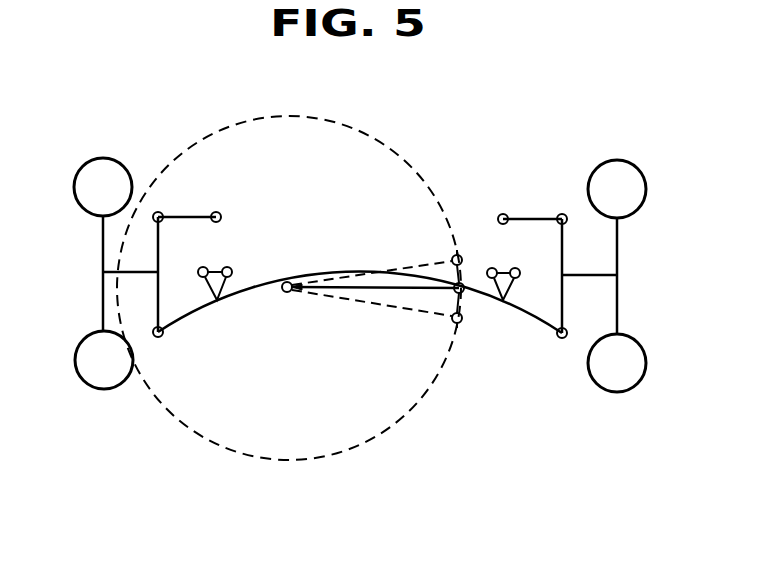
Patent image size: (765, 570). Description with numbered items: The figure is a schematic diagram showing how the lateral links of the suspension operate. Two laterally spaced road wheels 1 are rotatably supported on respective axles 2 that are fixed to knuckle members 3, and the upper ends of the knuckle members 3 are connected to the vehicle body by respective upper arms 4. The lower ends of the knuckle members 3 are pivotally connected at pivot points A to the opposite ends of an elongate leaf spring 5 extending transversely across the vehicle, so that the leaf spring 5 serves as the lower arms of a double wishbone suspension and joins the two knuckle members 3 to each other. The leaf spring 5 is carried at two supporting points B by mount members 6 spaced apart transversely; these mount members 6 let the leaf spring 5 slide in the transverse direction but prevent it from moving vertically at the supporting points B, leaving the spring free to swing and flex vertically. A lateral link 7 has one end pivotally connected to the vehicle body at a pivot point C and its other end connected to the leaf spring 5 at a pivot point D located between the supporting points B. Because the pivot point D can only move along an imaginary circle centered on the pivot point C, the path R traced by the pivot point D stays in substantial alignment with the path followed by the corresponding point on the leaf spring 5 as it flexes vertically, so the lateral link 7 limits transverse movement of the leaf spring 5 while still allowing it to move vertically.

The road wheel 1 is at (78, 372).
The axle 2 is at (140, 272).
The knuckle member 3 is at (163, 247).
The upper arm 4 is at (193, 212).
The leaf spring 5 is at (305, 272).
The mount member 6 is at (208, 292).
The lateral link 7 is at (363, 287).
The pivot point A is at (160, 336).
The supporting point B is at (218, 305).
The pivot point C is at (288, 292).
The pivot point D is at (466, 272).
The path R is at (368, 137).